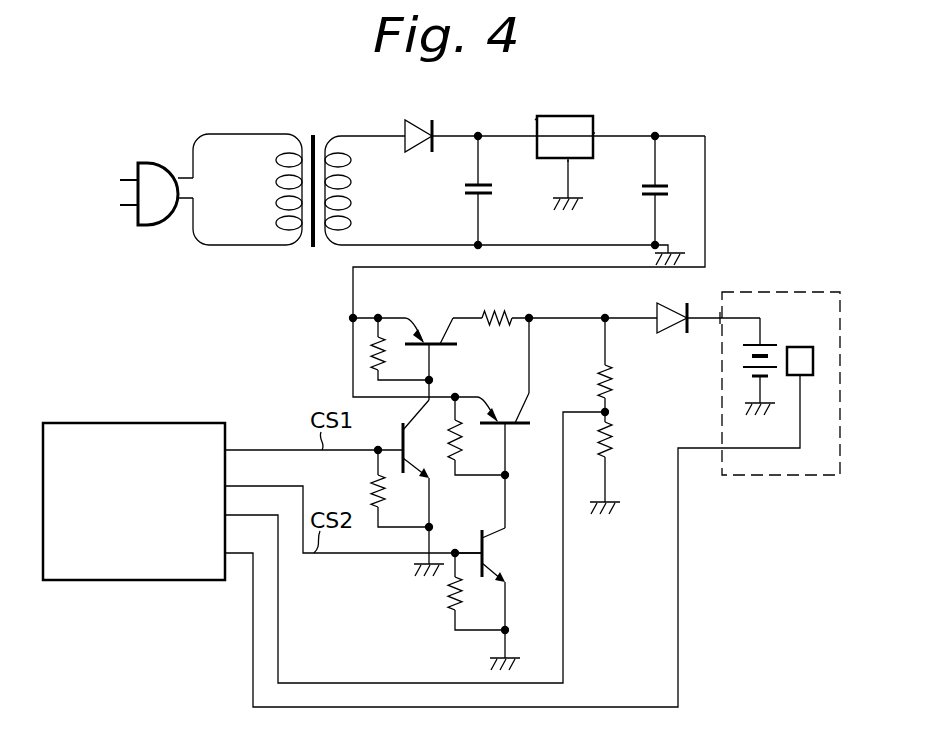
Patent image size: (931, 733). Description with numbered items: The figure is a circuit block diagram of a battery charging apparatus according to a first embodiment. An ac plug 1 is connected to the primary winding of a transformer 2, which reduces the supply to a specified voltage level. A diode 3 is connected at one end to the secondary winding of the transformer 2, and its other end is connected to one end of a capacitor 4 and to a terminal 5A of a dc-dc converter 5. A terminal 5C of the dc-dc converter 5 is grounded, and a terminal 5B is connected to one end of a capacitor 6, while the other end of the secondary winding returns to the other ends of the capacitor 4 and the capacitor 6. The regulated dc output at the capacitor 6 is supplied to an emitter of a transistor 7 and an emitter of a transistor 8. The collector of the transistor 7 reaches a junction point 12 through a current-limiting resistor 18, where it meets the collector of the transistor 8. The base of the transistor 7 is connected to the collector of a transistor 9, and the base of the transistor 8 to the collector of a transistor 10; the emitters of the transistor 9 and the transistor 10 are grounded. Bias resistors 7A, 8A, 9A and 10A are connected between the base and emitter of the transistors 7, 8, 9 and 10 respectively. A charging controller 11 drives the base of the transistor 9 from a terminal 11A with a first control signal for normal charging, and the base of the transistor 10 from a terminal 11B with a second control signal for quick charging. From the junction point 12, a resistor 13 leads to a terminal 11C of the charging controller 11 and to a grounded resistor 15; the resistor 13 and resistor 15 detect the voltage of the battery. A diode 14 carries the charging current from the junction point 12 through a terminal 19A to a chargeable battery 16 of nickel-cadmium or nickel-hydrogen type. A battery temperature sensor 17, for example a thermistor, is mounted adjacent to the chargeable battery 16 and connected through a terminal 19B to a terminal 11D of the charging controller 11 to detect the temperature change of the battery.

The ac plug 1 is at (152, 163).
The transformer 2 is at (316, 126).
The diode 3 is at (413, 120).
The capacitor 4 is at (495, 186).
The dc-dc converter 5 is at (567, 115).
The terminal 5A is at (537, 118).
The terminal 5B is at (595, 133).
The terminal 5C is at (570, 162).
The capacitor 6 is at (665, 185).
The transistor 7 is at (429, 332).
The resistor 7A is at (373, 352).
The transistor 8 is at (504, 410).
The resistor 8A is at (463, 431).
The transistor 9 is at (422, 459).
The resistor 9A is at (373, 490).
The transistor 10 is at (494, 553).
The resistor 10A is at (441, 596).
The charging controller 11 is at (149, 423).
The terminal 11A is at (227, 446).
The terminal 11B is at (227, 482).
The terminal 11C is at (227, 512).
The terminal 11D is at (227, 548).
The junction point 12 is at (532, 315).
The resistor 13 is at (613, 381).
The diode 14 is at (670, 333).
The resistor 15 is at (613, 440).
The chargeable battery 16 is at (764, 343).
The battery temperature sensor 17 is at (807, 346).
The resistor 18 is at (492, 312).
The terminal 19A is at (720, 316).
The terminal 19B is at (722, 452).